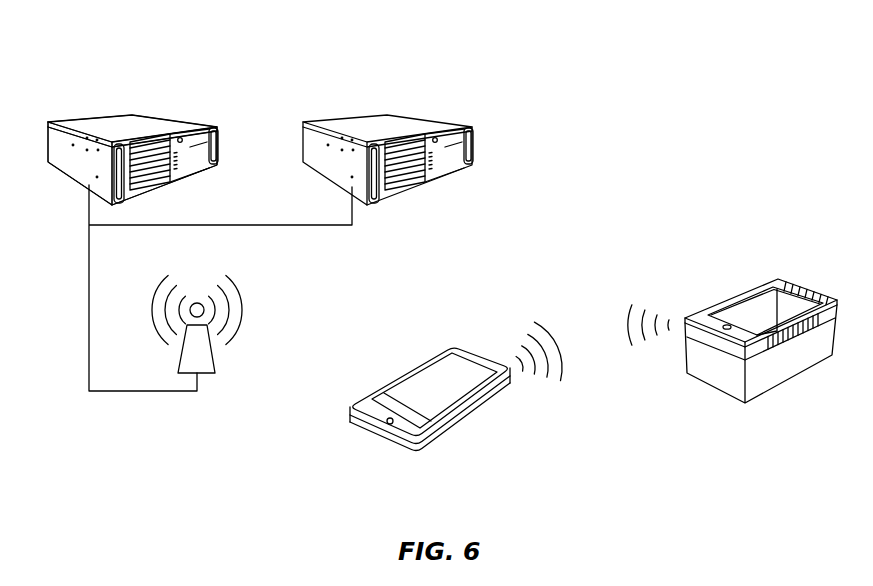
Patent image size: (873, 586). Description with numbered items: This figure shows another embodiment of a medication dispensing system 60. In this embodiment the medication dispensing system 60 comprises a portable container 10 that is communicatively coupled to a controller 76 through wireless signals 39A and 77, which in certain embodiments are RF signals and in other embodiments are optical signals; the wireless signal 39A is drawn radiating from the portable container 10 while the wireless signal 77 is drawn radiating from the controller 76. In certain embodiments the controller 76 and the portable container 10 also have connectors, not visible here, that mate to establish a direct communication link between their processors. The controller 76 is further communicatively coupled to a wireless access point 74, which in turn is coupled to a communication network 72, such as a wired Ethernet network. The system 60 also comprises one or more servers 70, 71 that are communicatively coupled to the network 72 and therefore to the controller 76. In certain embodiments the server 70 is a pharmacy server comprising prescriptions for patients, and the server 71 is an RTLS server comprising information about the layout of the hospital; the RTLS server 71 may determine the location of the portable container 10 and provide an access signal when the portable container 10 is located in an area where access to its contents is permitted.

The medication dispensing system 60 is at (246, 50).
The server 70 is at (102, 124).
The server 71 is at (357, 124).
The communication network 72 is at (88, 288).
The wireless access point 74 is at (215, 367).
The controller 76 is at (389, 345).
The wireless signal 77 is at (543, 327).
The portable container 10 is at (742, 270).
The wireless signal 39A is at (648, 358).